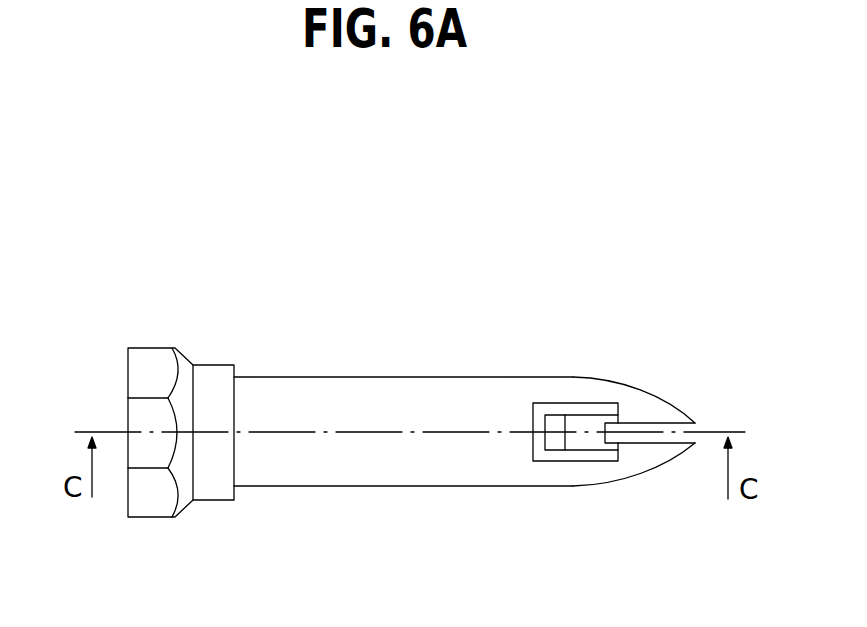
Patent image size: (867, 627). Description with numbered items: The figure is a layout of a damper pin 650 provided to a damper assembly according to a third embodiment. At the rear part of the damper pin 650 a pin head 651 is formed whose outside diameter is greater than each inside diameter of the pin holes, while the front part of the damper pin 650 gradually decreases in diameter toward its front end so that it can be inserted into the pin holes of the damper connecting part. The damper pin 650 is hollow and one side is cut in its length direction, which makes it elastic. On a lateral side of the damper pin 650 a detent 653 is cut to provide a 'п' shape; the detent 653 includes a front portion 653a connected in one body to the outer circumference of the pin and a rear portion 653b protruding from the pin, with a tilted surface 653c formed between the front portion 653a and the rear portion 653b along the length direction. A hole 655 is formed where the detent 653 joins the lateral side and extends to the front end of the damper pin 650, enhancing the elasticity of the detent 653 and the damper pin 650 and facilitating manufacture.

The damper pin 650 is at (404, 340).
The pin head 651 is at (150, 357).
The detent 653 is at (585, 465).
The front portion 653a is at (627, 413).
The rear portion 653b is at (554, 438).
The tilted surface 653c is at (585, 427).
The hole 655 is at (643, 438).